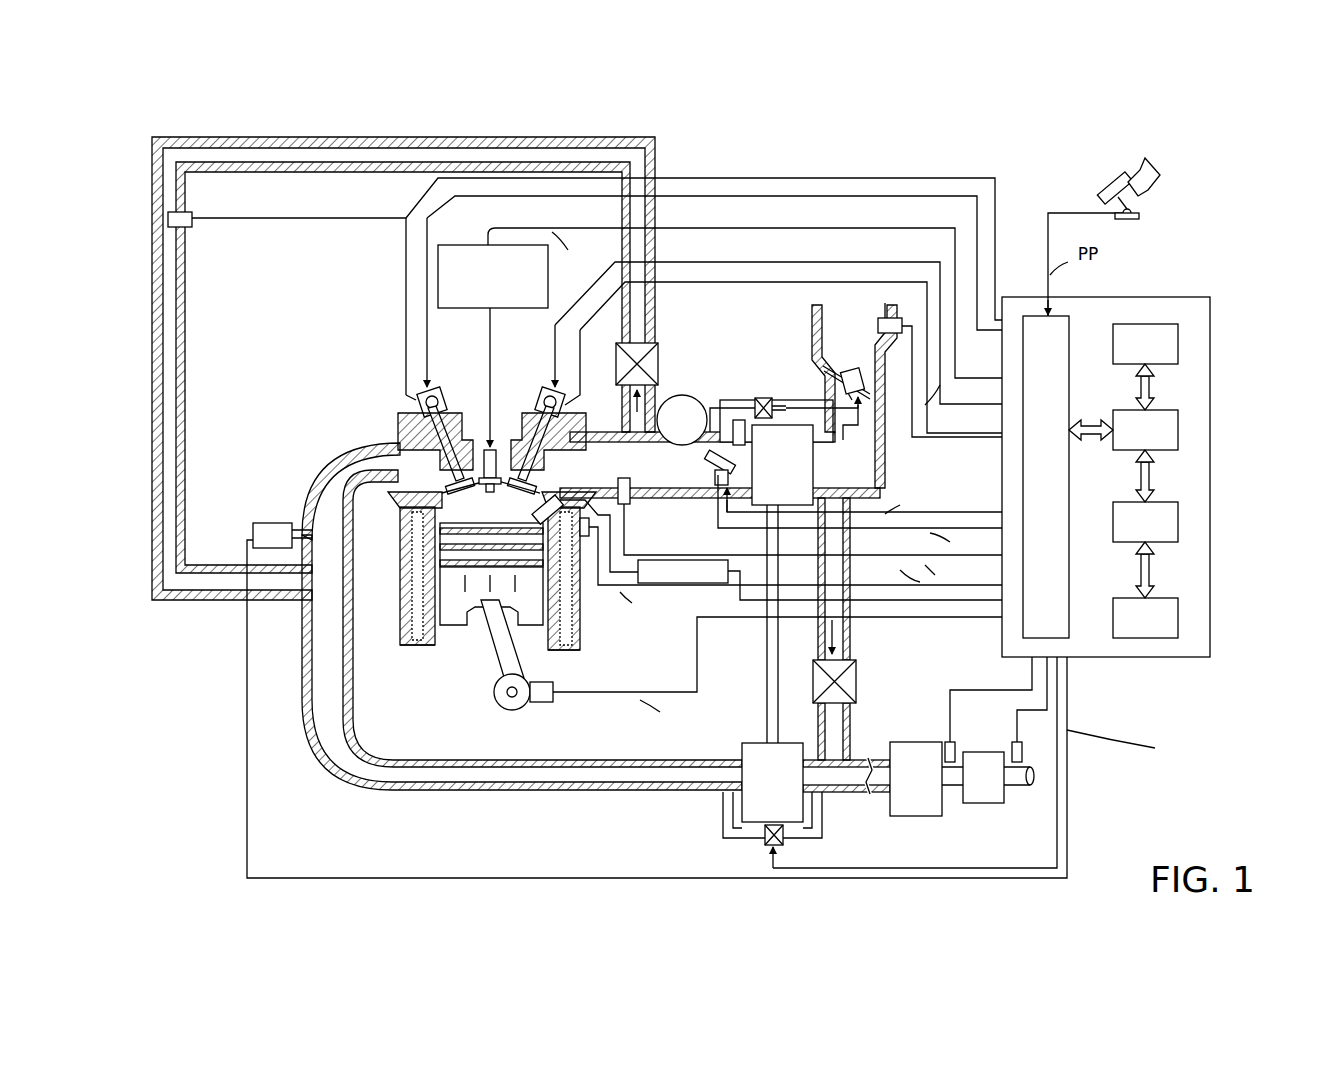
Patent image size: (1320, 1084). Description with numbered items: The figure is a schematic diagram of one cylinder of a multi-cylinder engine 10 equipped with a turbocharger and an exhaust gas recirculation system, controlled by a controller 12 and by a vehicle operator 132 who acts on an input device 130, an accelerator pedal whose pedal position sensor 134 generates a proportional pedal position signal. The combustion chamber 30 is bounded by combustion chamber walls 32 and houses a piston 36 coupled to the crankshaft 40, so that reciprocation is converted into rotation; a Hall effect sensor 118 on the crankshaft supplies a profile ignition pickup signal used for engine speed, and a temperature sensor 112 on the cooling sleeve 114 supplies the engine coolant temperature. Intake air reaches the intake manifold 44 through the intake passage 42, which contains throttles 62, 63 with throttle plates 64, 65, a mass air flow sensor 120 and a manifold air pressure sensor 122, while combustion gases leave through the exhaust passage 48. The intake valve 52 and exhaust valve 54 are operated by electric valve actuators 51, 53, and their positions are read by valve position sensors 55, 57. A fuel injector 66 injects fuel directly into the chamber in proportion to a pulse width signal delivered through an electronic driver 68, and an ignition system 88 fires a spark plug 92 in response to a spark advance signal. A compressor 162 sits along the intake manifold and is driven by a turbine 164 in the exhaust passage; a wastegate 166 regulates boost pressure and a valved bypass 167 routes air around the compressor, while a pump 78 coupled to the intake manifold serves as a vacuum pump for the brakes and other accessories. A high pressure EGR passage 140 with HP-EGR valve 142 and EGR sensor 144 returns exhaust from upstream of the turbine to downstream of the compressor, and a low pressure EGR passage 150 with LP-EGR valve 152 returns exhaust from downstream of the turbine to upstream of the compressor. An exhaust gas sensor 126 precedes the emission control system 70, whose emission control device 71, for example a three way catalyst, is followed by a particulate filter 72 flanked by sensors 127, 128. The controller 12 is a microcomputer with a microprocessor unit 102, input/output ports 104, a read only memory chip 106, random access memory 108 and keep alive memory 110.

The engine 10 is at (352, 372).
The controller 12 is at (1146, 465).
The combustion chamber 30 is at (410, 602).
The combustion chamber walls 32 is at (440, 640).
The piston 36 is at (478, 620).
The crankshaft 40 is at (500, 708).
The intake passage 42 is at (854, 396).
The intake manifold 44 is at (720, 465).
The exhaust passage 48 is at (522, 616).
The electric valve actuator 51 is at (546, 385).
The intake valve 52 is at (533, 484).
The electric valve actuator 53 is at (438, 385).
The exhaust valve 54 is at (440, 470).
The valve position sensor 55 is at (568, 400).
The valve position sensor 57 is at (415, 398).
The throttle 62 is at (708, 458).
The throttle 63 is at (835, 372).
The throttle plate 64 is at (712, 470).
The throttle plate 65 is at (842, 383).
The fuel injector 66 is at (534, 514).
The electronic driver 68 is at (735, 572).
The emission control system 70 is at (913, 840).
The emission control device 71 is at (916, 779).
The particulate filter 72 is at (983, 777).
The pump 78 is at (682, 420).
The ignition system 88 is at (452, 245).
The spark plug 92 is at (492, 445).
The microprocessor unit 102 is at (1180, 428).
The input/output ports 104 is at (1072, 318).
The read only memory chip 106 is at (1180, 340).
The random access memory 108 is at (1180, 522).
The keep alive memory 110 is at (1180, 618).
The temperature sensor 112 is at (582, 545).
The cooling sleeve 114 is at (572, 625).
The Hall effect sensor 118 is at (548, 705).
The mass air flow sensor 120 is at (892, 318).
The manifold air pressure sensor 122 is at (618, 480).
The exhaust gas sensor 126 is at (253, 527).
The sensor 127 is at (948, 740).
The sensor 128 is at (1015, 740).
The input device 130 is at (1105, 193).
The vehicle operator 132 is at (1162, 172).
The pedal position sensor 134 is at (1135, 215).
The high pressure EGR passage 140 is at (407, 138).
The HP-EGR valve 142 is at (659, 372).
The EGR sensor 144 is at (185, 227).
The low pressure EGR passage 150 is at (850, 652).
The LP-EGR valve 152 is at (856, 692).
The compressor 162 is at (776, 571).
The turbine 164 is at (772, 782).
The wastegate 166 is at (783, 843).
The valved bypass 167 is at (755, 398).